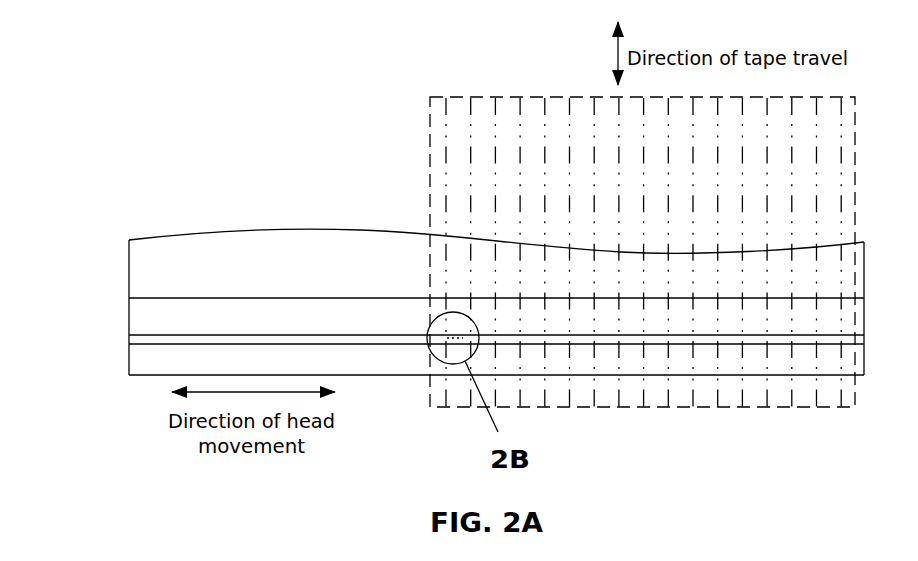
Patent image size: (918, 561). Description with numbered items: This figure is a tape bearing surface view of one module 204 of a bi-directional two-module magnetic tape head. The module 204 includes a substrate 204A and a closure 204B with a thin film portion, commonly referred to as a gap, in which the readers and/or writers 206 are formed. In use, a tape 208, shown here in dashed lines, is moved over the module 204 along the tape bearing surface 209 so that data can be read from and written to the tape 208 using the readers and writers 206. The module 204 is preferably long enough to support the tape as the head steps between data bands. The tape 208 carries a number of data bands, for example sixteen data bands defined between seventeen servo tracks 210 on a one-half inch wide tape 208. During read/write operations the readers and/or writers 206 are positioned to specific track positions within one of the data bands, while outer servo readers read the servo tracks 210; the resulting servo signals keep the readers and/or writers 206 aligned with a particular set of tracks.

The module 204 is at (448, 302).
The substrate 204A is at (282, 229).
The closure 204B is at (128, 360).
The readers and/or writers 206 is at (438, 337).
The tape 208 is at (428, 96).
The tape bearing surface 209 is at (330, 320).
The servo tracks 210 is at (542, 185).